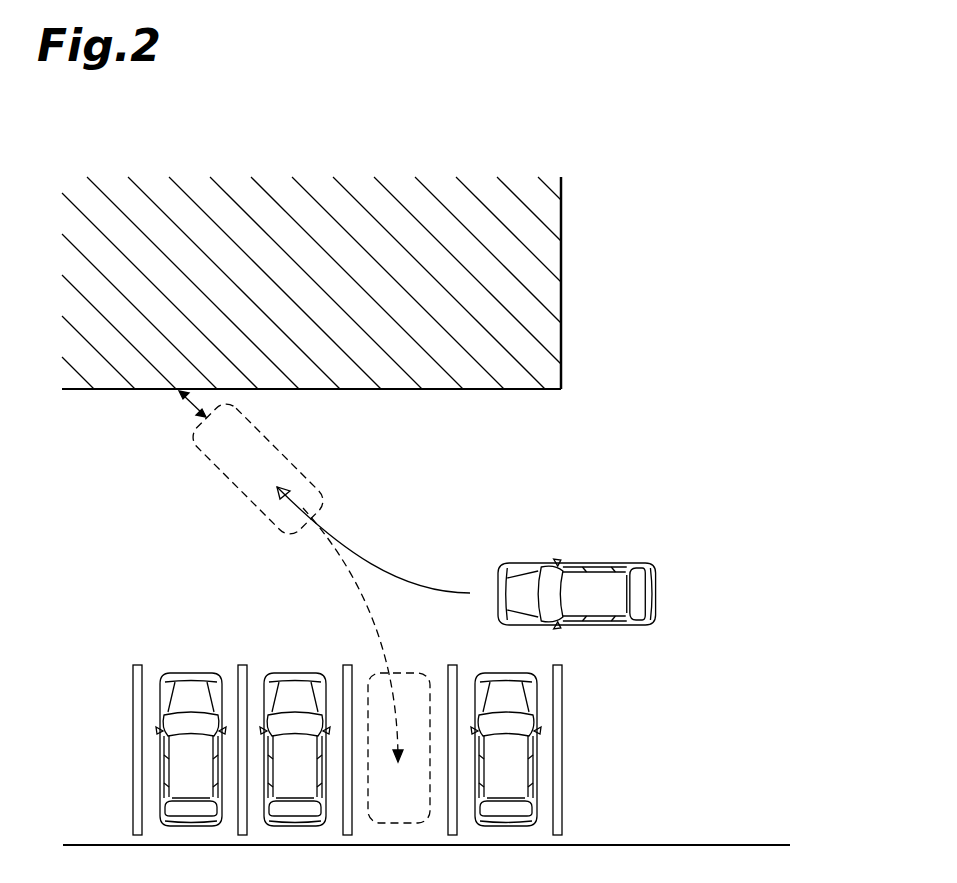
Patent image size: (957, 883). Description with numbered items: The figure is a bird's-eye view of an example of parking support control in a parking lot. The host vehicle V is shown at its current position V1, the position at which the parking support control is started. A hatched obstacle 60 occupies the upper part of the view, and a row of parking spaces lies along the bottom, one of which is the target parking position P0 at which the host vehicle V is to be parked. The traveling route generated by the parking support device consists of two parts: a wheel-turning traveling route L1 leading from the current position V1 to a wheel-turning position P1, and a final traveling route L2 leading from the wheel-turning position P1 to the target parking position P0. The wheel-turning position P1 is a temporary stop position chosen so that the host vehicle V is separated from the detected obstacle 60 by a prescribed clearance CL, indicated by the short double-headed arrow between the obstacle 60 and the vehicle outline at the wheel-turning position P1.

The obstacle 60 is at (561, 313).
The prescribed clearance CL is at (188, 404).
The host vehicle V is at (247, 503).
The wheel-turning position P1 is at (276, 485).
The target parking position P0 is at (413, 673).
The wheel-turning traveling route L1 is at (389, 572).
The final traveling route L2 is at (380, 625).
The current position V1 is at (600, 562).